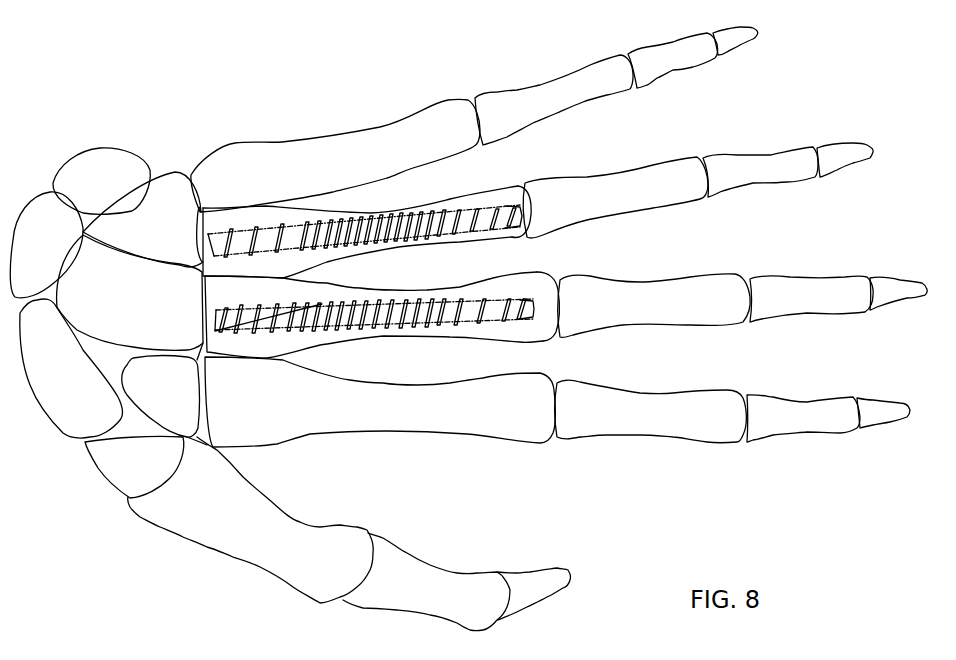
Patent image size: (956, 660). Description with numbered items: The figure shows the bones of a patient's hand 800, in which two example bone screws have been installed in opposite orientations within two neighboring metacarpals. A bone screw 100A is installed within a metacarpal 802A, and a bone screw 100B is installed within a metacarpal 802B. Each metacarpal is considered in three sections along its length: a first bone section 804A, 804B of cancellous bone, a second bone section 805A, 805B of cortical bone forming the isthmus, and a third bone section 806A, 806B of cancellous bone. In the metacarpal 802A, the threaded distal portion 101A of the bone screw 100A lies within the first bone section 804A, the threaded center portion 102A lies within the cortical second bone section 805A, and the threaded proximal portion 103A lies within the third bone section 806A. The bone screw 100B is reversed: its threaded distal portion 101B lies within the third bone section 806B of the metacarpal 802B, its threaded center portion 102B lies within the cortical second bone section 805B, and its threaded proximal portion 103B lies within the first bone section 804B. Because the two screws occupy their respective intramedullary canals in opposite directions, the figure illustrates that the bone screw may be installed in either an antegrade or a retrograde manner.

The hand 800 is at (148, 121).
The bone screw 100A is at (209, 237).
The bone screw 100B is at (537, 305).
The threaded distal portion 101A is at (460, 203).
The threaded distal portion 101B is at (267, 301).
The threaded center portion 102A is at (344, 219).
The threaded center portion 102B is at (383, 335).
The threaded proximal portion 103A is at (259, 220).
The threaded proximal portion 103B is at (483, 291).
The second bone section 805A is at (366, 214).
The second bone section 805B is at (370, 294).
The metacarpal 802A is at (532, 204).
The metacarpal 802B is at (551, 339).
The first bone section 804A is at (493, 196).
The first bone section 804B is at (541, 289).
The third bone section 806A is at (237, 218).
The third bone section 806B is at (252, 347).